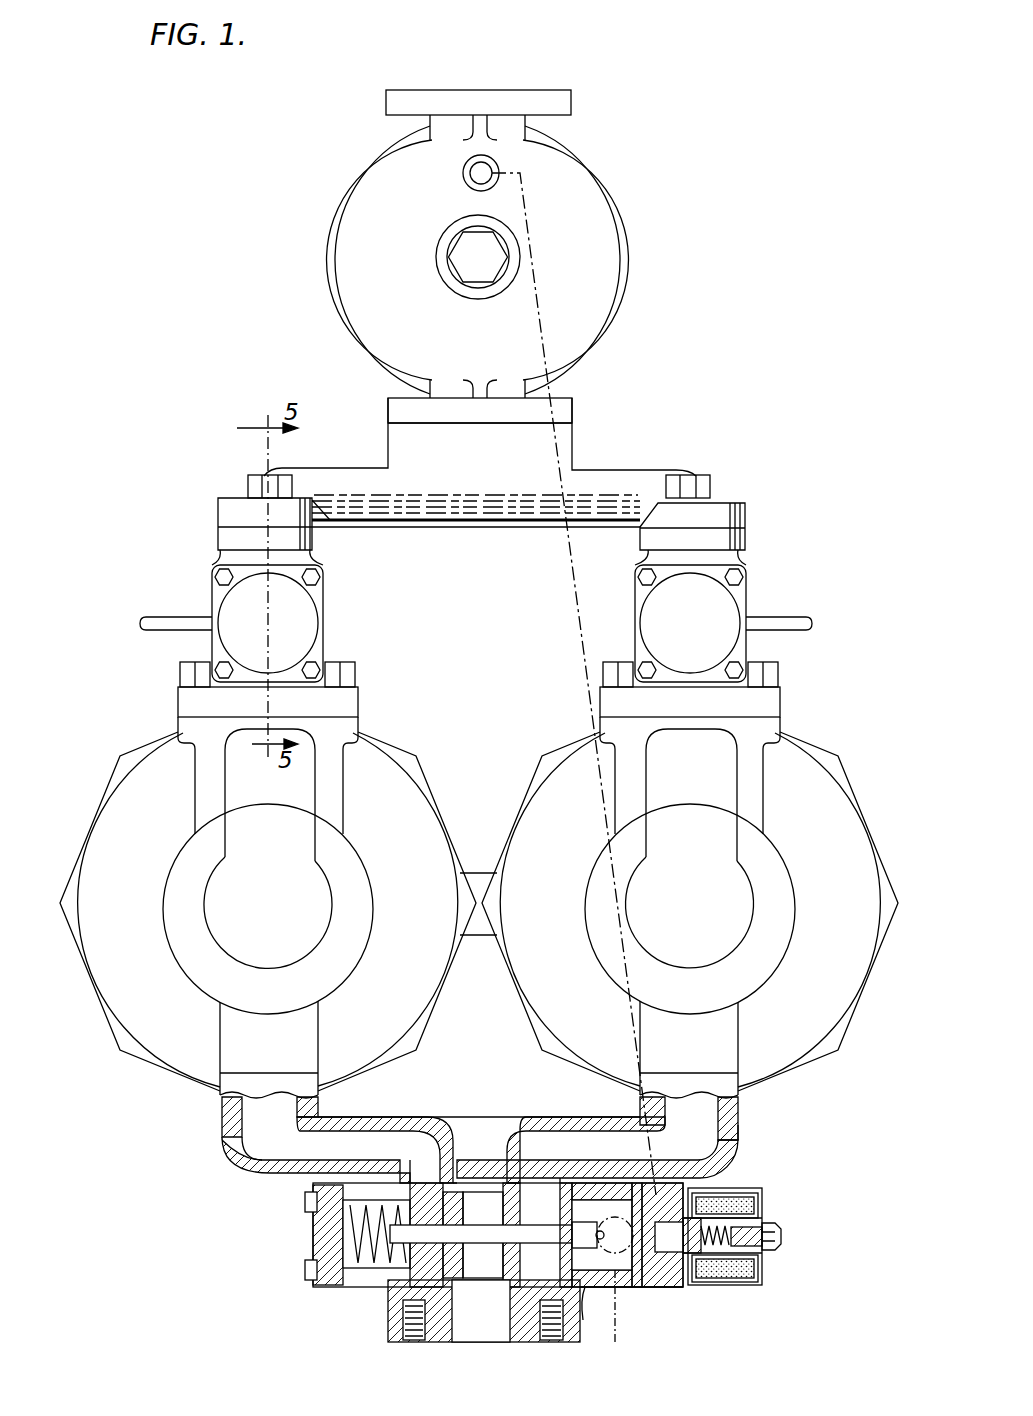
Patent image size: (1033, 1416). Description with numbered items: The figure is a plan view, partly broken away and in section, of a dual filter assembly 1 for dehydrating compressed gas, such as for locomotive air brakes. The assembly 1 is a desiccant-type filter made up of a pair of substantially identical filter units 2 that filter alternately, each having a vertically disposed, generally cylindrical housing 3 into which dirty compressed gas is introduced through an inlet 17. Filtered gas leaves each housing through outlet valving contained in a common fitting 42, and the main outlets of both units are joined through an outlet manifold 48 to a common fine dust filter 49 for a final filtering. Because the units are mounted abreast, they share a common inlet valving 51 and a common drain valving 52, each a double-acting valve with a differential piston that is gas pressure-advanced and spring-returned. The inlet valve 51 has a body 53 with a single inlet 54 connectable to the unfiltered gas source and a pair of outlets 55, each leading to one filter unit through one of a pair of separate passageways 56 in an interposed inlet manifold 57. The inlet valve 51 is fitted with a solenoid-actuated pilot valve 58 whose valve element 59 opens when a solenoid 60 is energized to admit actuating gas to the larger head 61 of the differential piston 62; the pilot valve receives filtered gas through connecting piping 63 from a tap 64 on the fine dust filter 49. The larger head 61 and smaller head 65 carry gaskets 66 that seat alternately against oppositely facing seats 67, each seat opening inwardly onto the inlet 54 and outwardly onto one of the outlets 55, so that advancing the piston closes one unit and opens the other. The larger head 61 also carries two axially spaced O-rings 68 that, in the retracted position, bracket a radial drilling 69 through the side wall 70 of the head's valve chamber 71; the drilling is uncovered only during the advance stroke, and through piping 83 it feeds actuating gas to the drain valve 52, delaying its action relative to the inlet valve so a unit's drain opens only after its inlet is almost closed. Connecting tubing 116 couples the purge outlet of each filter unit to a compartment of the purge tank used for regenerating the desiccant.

The dual filter assembly 1 is at (870, 820).
The filter units 2 is at (98, 992).
The housing 3 is at (156, 906).
The inlet 17 is at (264, 1105).
The fitting 42 is at (212, 588).
The outlet manifold 48 is at (572, 451).
The fine dust filter 49 is at (613, 217).
The common inlet valving 51 is at (340, 1290).
The common drain valving 52 is at (482, 940).
The body 53 is at (596, 1300).
The inlet 54 is at (492, 1336).
The outlets 55 is at (426, 1176).
The passageways 56 is at (343, 1156).
The inlet manifold 57 is at (736, 1152).
The solenoid-actuated pilot valve 58 is at (774, 1192).
The valve element 59 is at (711, 1236).
The solenoid 60 is at (743, 1284).
The larger head 61 is at (566, 1330).
The differential piston 62 is at (656, 1276).
The connecting piping 63 is at (574, 583).
The tap 64 is at (463, 178).
The smaller head 65 is at (390, 1276).
The gaskets 66 is at (540, 1195).
The seats 67 is at (526, 1270).
The O-rings 68 is at (588, 1185).
The radial drilling 69 is at (617, 1220).
The side wall 70 is at (585, 1290).
The valve chamber 71 is at (638, 1207).
The piping 83 is at (616, 1328).
The connecting tubing 116 is at (166, 617).